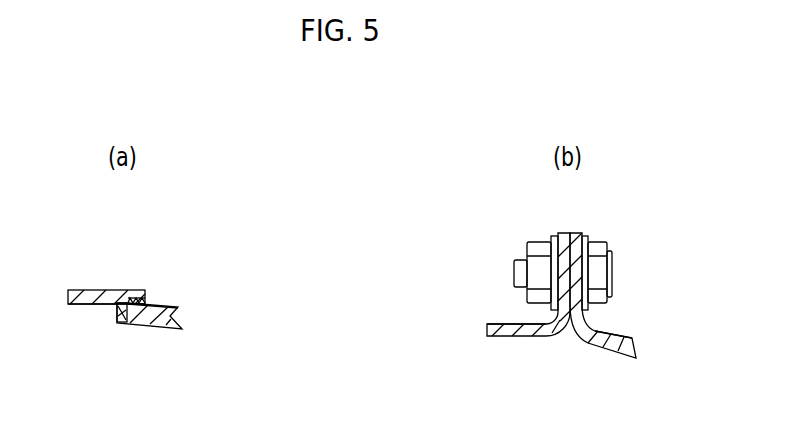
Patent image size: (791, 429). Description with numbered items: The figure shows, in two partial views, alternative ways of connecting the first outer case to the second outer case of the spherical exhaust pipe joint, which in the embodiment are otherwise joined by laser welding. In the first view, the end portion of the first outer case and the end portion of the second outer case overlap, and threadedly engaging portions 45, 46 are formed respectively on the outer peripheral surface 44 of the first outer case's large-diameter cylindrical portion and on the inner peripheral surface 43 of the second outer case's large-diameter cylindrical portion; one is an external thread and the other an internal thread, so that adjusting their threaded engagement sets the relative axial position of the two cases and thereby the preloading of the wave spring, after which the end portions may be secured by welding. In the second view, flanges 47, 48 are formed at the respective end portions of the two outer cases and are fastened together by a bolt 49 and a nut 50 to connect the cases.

The inner peripheral surface 43 is at (119, 306).
The outer peripheral surface 44 is at (142, 302).
The threadedly engaging portion 45 is at (132, 301).
The threadedly engaging portion 46 is at (122, 322).
The flange 47 is at (598, 279).
The flange 48 is at (522, 277).
The bolt 49 is at (604, 266).
The nut 50 is at (537, 266).